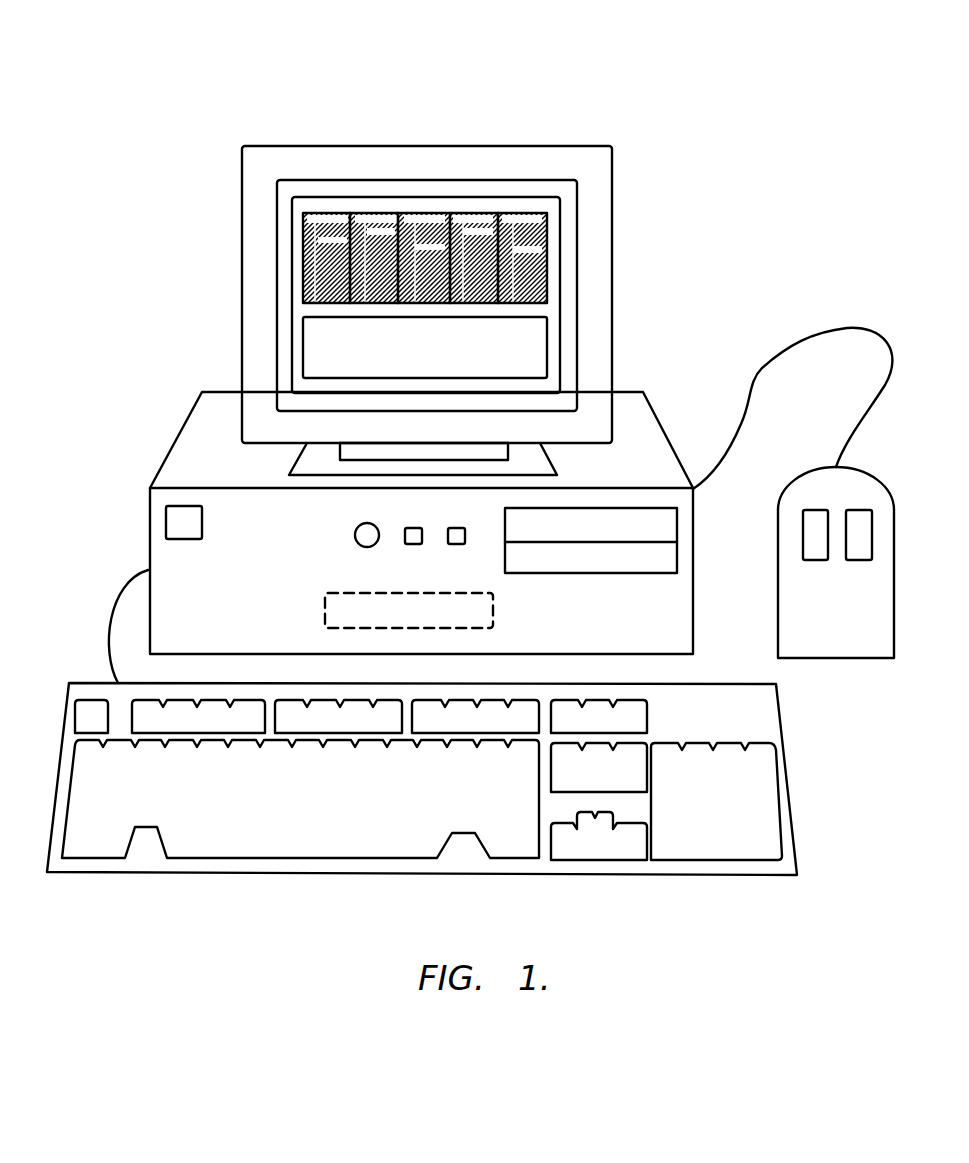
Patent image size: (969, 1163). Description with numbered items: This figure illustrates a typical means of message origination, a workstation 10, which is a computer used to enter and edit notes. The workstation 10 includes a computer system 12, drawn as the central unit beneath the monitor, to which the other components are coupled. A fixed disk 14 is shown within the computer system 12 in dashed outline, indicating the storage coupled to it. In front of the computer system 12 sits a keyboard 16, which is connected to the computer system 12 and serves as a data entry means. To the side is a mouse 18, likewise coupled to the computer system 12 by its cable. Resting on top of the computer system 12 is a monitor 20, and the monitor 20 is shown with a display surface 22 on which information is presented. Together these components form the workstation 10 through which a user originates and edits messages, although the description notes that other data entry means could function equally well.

The workstation 10 is at (680, 53).
The computer system 12 is at (693, 567).
The fixed disk 14 is at (493, 609).
The keyboard 16 is at (788, 851).
The mouse 18 is at (870, 471).
The monitor 20 is at (612, 292).
The display surface 22 is at (547, 263).